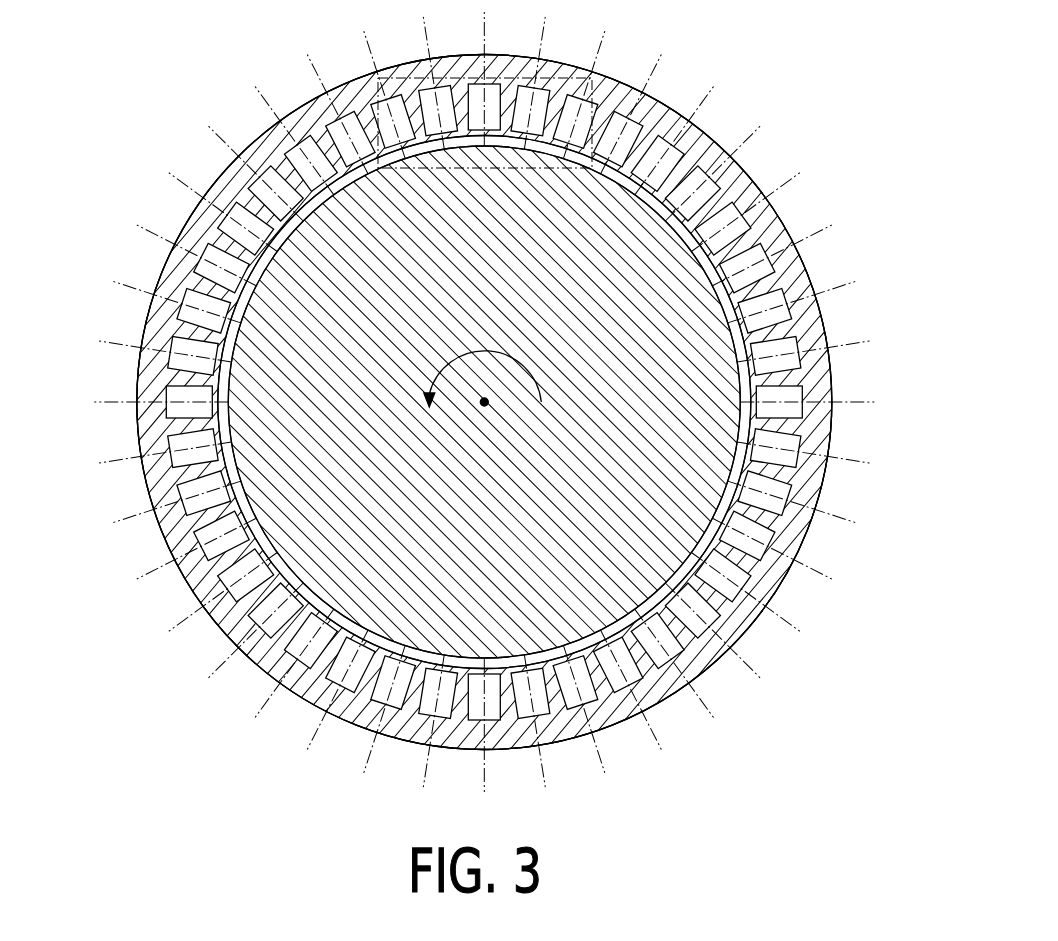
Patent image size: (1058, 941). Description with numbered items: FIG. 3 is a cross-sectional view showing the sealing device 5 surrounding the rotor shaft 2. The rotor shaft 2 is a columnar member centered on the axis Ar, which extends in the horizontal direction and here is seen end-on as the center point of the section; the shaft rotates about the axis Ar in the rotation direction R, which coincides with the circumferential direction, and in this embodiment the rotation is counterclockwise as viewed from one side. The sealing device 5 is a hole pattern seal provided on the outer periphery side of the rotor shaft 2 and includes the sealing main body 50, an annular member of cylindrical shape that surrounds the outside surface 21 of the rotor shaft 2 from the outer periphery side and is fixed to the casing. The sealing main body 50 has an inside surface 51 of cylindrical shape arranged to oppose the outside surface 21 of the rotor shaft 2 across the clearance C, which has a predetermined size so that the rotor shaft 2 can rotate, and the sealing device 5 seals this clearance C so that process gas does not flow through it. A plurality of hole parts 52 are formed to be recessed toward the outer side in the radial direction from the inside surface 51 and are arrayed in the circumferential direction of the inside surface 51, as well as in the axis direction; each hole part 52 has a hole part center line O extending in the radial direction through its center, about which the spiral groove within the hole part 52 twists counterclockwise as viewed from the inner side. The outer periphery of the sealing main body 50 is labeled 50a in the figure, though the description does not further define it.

The rotor shaft 2 is at (485, 397).
The sealing device 5 is at (532, 395).
The outside surface 21 is at (858, 415).
The sealing main body 50 is at (491, 448).
The outer peripheral surface of stator core 50a is at (480, 407).
The inside surface 51 is at (579, 402).
The hole parts 52 is at (541, 402).
The hole part center line O is at (462, 402).
The clearance C is at (397, 402).
The rotation direction R is at (483, 334).
The axis Ar is at (486, 446).